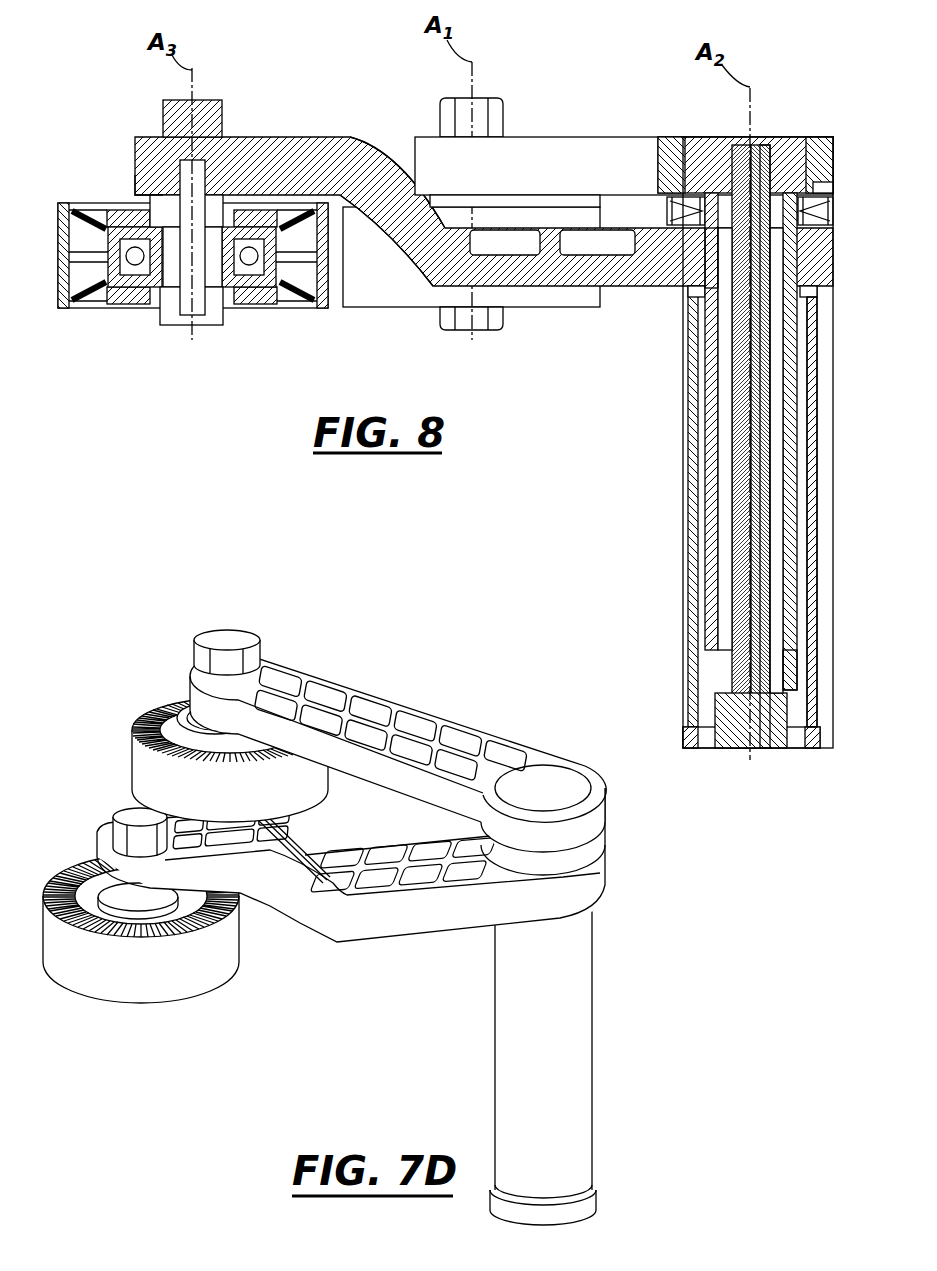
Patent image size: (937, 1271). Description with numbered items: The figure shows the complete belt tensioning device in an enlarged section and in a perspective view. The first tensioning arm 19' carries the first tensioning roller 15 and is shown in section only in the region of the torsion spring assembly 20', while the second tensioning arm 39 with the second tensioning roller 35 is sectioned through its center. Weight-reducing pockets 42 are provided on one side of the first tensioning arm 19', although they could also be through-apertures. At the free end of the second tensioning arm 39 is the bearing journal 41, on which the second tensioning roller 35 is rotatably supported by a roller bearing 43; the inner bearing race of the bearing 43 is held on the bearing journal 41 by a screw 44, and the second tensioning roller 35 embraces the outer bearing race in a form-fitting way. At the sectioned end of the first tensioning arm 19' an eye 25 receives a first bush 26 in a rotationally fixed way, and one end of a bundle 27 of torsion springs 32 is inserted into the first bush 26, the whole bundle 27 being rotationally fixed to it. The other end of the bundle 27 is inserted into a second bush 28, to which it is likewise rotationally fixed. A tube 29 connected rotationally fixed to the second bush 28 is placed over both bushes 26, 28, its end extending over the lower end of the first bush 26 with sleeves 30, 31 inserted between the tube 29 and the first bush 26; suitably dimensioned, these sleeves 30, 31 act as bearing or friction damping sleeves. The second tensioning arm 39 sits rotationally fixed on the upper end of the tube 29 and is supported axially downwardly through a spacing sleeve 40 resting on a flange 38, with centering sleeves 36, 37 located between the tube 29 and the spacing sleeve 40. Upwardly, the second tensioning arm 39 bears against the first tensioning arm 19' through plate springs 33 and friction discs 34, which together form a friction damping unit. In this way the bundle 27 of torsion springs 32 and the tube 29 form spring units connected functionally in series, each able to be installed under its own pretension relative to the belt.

In FIG. 8, the first tensioning roller 15 is at (387, 322).
In FIG. 7D, the first tensioning roller 15 is at (160, 692).
In FIG. 8, the first tensioning arm 19' is at (624, 134).
In FIG. 7D, the first tensioning arm 19' is at (398, 741).
In FIG. 8, the torsion spring assembly 20' is at (685, 424).
In FIG. 7D, the torsion spring assembly 20' is at (487, 1065).
In FIG. 8, the eye 25 is at (835, 136).
In FIG. 8, the first bush 26 is at (805, 138).
In FIG. 8, the bundle of torsion springs 27 is at (785, 490).
In FIG. 8, the second bush 28 is at (775, 752).
In FIG. 8, the tube 29 is at (812, 410).
In FIG. 8, the sleeve 30 is at (715, 337).
In FIG. 8, the sleeve 31 is at (715, 247).
In FIG. 8, the torsion spring 32 is at (768, 548).
In FIG. 8, the plate spring 33 is at (835, 213).
In FIG. 8, the friction disc 34 is at (830, 188).
In FIG. 8, the second tensioning roller 35 is at (80, 308).
In FIG. 7D, the second tensioning roller 35 is at (152, 1000).
In FIG. 8, the centering sleeve 36 is at (797, 676).
In FIG. 8, the centering sleeve 37 is at (782, 360).
In FIG. 8, the flange 38 is at (820, 738).
In FIG. 8, the second tensioning arm 39 is at (237, 143).
In FIG. 7D, the second tensioning arm 39 is at (390, 930).
In FIG. 8, the spacing sleeve 40 is at (817, 582).
In FIG. 8, the bearing journal 41 is at (140, 186).
In FIG. 8, the pocket 42 is at (325, 140).
In FIG. 8, the roller bearing 43 is at (255, 298).
In FIG. 8, the screw 44 is at (198, 316).